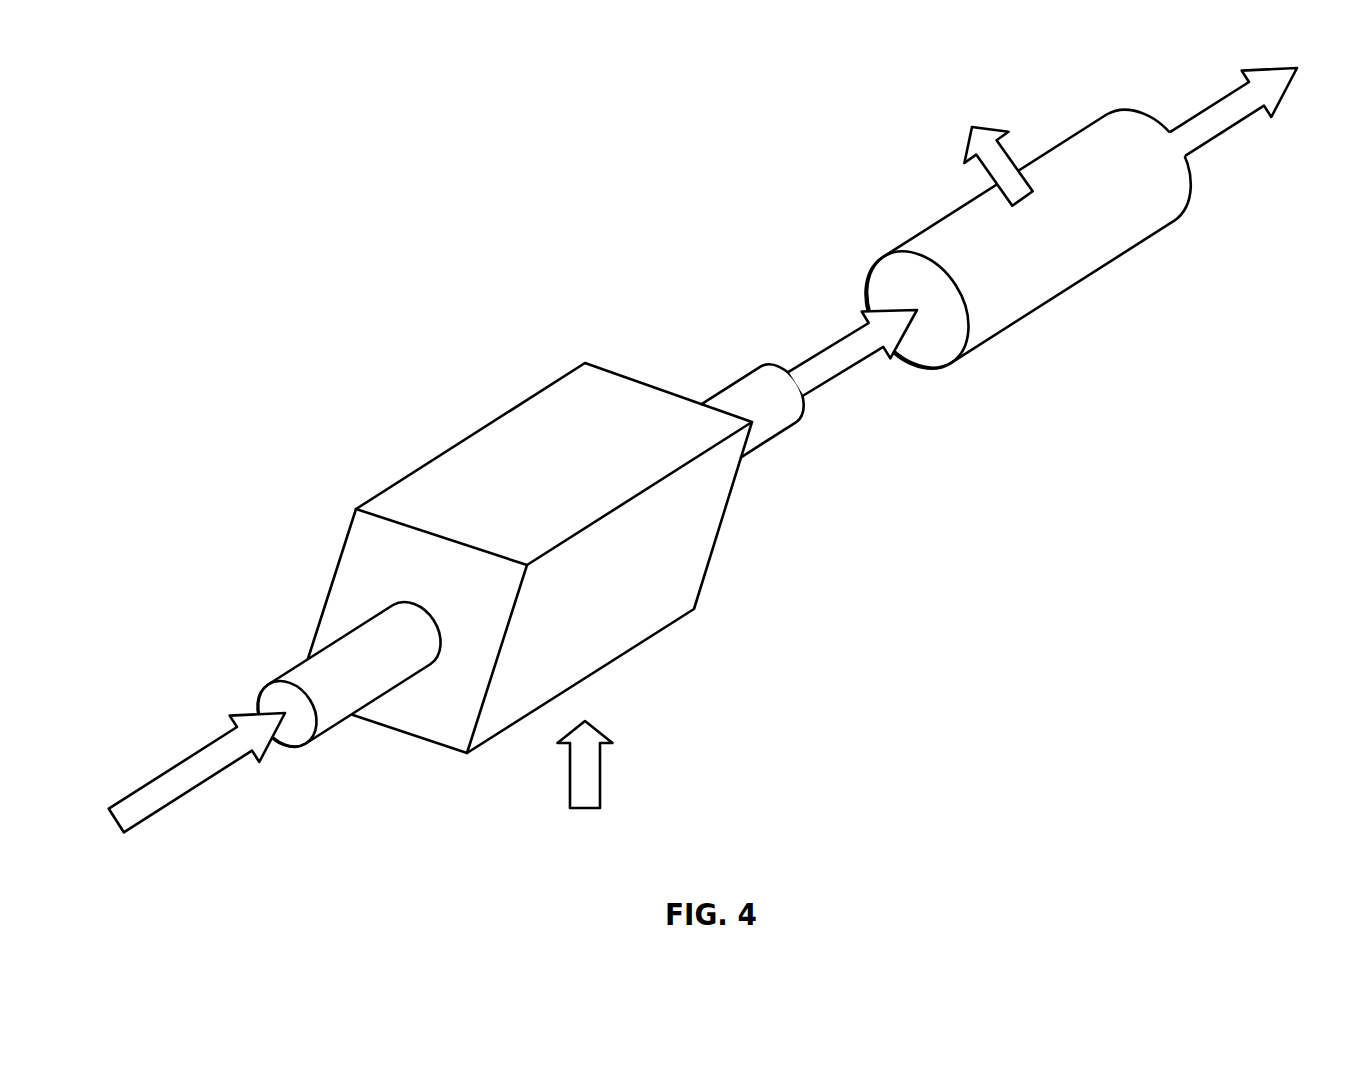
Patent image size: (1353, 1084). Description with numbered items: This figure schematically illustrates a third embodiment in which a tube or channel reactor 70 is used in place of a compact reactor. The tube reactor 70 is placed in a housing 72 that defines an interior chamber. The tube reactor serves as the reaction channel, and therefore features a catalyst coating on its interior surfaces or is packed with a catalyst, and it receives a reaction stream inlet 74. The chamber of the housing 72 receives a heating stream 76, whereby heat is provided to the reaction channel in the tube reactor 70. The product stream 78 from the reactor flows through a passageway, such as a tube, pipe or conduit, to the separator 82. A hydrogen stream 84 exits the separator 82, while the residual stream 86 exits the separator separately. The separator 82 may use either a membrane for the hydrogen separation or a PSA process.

The tube or channel reactor 70 is at (323, 737).
The housing 72 is at (707, 574).
The reaction stream inlet 74 is at (182, 798).
The heating stream 76 is at (600, 772).
The product stream 78 is at (847, 373).
The separator 82 is at (1052, 303).
The hydrogen stream 84 is at (1010, 150).
The residual stream 86 is at (1217, 138).